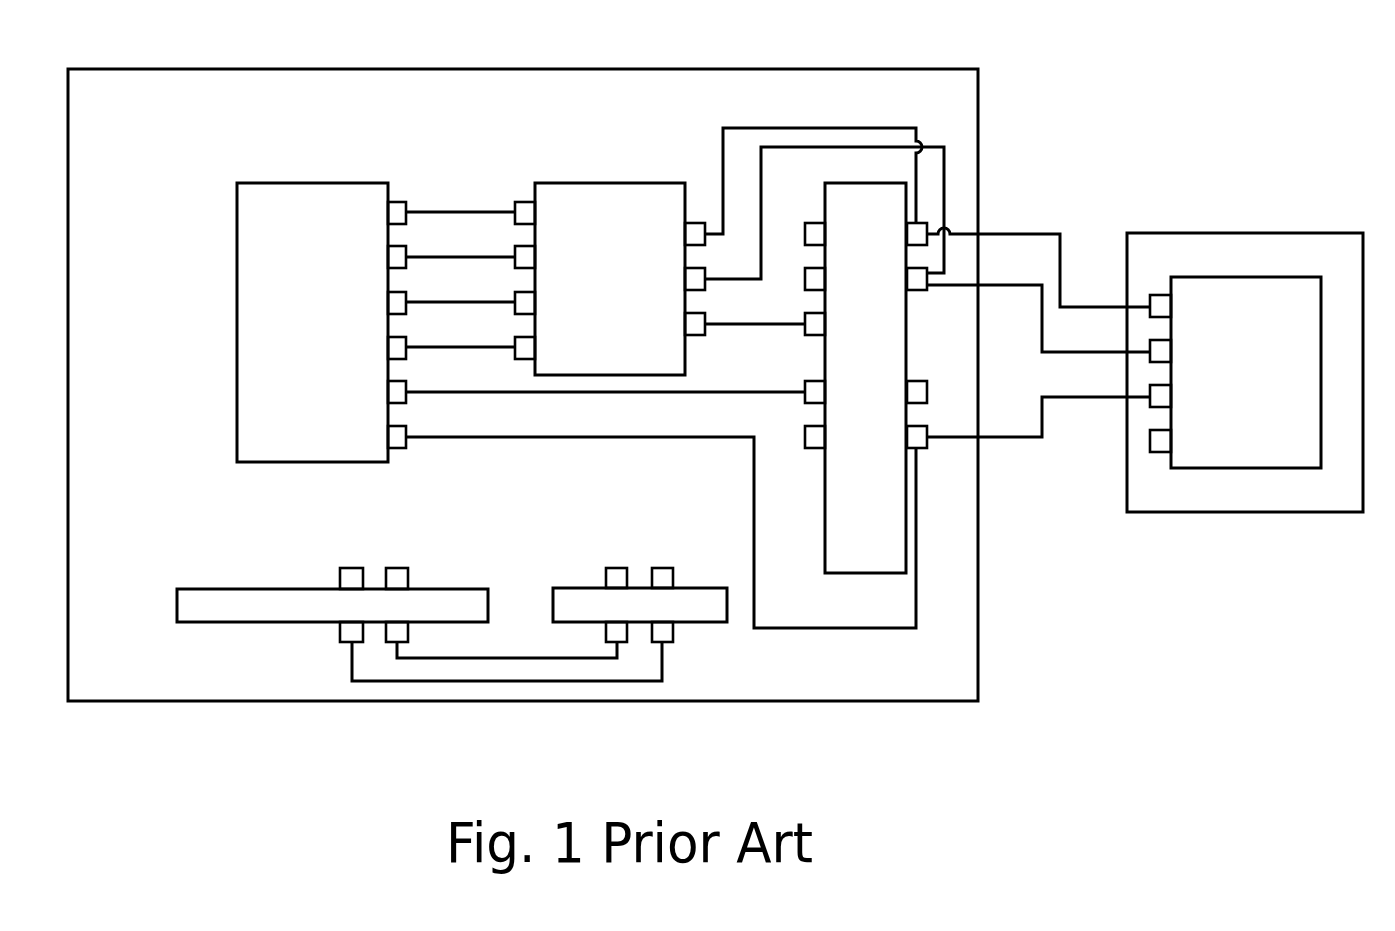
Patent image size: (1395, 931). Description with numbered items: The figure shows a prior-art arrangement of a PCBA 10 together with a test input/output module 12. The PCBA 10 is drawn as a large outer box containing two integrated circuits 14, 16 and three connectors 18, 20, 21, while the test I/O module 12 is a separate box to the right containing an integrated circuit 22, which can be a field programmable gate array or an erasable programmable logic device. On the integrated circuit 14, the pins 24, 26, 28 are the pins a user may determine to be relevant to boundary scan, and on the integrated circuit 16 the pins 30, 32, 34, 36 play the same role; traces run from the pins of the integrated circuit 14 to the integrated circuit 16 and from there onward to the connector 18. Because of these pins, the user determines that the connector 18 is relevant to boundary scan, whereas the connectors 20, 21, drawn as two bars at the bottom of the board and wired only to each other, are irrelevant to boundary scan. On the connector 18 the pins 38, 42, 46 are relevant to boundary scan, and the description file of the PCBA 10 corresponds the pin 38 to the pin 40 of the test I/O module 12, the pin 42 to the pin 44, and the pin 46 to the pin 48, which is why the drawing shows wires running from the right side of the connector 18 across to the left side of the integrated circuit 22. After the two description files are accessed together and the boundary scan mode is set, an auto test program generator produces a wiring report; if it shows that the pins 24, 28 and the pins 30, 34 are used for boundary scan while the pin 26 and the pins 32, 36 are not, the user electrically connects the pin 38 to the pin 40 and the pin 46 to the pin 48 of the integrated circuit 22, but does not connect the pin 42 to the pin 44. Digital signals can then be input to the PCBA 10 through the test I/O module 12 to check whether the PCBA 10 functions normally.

The PCBA 10 is at (935, 69).
The test input/output (I/O) module 12 is at (1318, 229).
The integrated circuit 14 is at (322, 328).
The integrated circuit 16 is at (622, 290).
The connector 18 is at (880, 371).
The connector 20 is at (321, 608).
The connector 21 is at (704, 610).
The integrated circuit 22 is at (1265, 380).
The pin 24 is at (400, 208).
The pin 26 is at (400, 257).
The pin 28 is at (395, 440).
The pin 30 is at (524, 210).
The pin 32 is at (524, 257).
The pin 34 is at (702, 233).
The pin 36 is at (698, 277).
The pin 38 is at (917, 233).
The pin 40 is at (1160, 303).
The pin 42 is at (917, 280).
The pin 44 is at (1158, 347).
The pin 46 is at (915, 440).
The pin 48 is at (1157, 398).